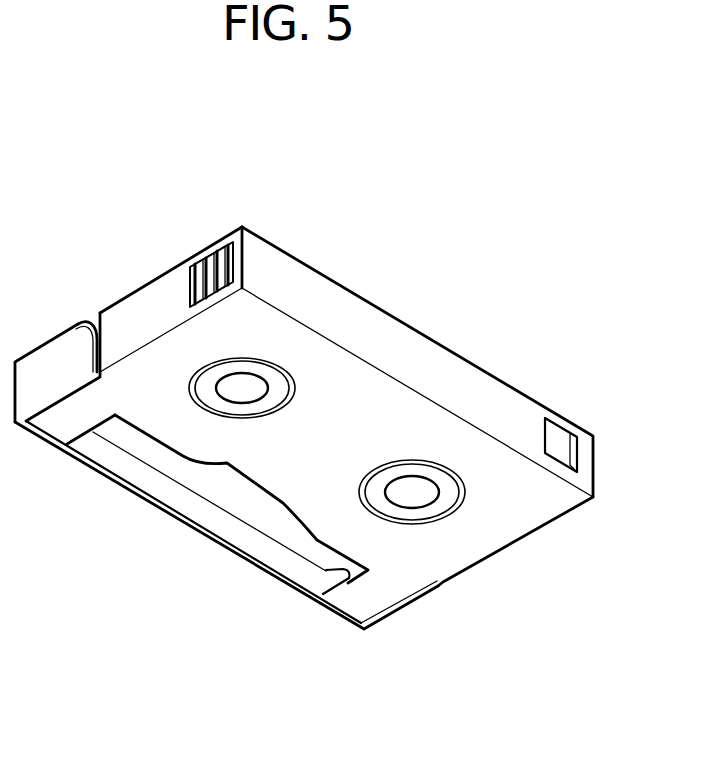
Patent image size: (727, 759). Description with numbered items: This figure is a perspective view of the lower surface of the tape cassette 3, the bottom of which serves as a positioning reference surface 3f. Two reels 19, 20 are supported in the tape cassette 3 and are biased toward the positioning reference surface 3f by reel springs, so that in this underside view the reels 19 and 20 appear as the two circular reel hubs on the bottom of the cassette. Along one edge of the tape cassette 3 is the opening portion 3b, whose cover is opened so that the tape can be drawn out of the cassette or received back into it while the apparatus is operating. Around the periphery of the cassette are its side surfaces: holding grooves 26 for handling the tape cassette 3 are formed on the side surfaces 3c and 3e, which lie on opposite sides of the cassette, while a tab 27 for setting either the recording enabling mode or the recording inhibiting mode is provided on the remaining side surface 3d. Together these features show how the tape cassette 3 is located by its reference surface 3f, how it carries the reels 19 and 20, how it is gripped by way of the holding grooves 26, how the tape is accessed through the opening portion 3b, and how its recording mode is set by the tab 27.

The tape cassette 3 is at (357, 284).
The opening portion 3b is at (180, 521).
The side surface 3c is at (538, 532).
The side surface 3d is at (435, 355).
The side surface 3e is at (152, 297).
The positioning reference surface 3f is at (318, 492).
The reel 19 is at (448, 495).
The reel 20 is at (230, 406).
The holding grooves 26 is at (213, 256).
The tab 27 is at (555, 432).